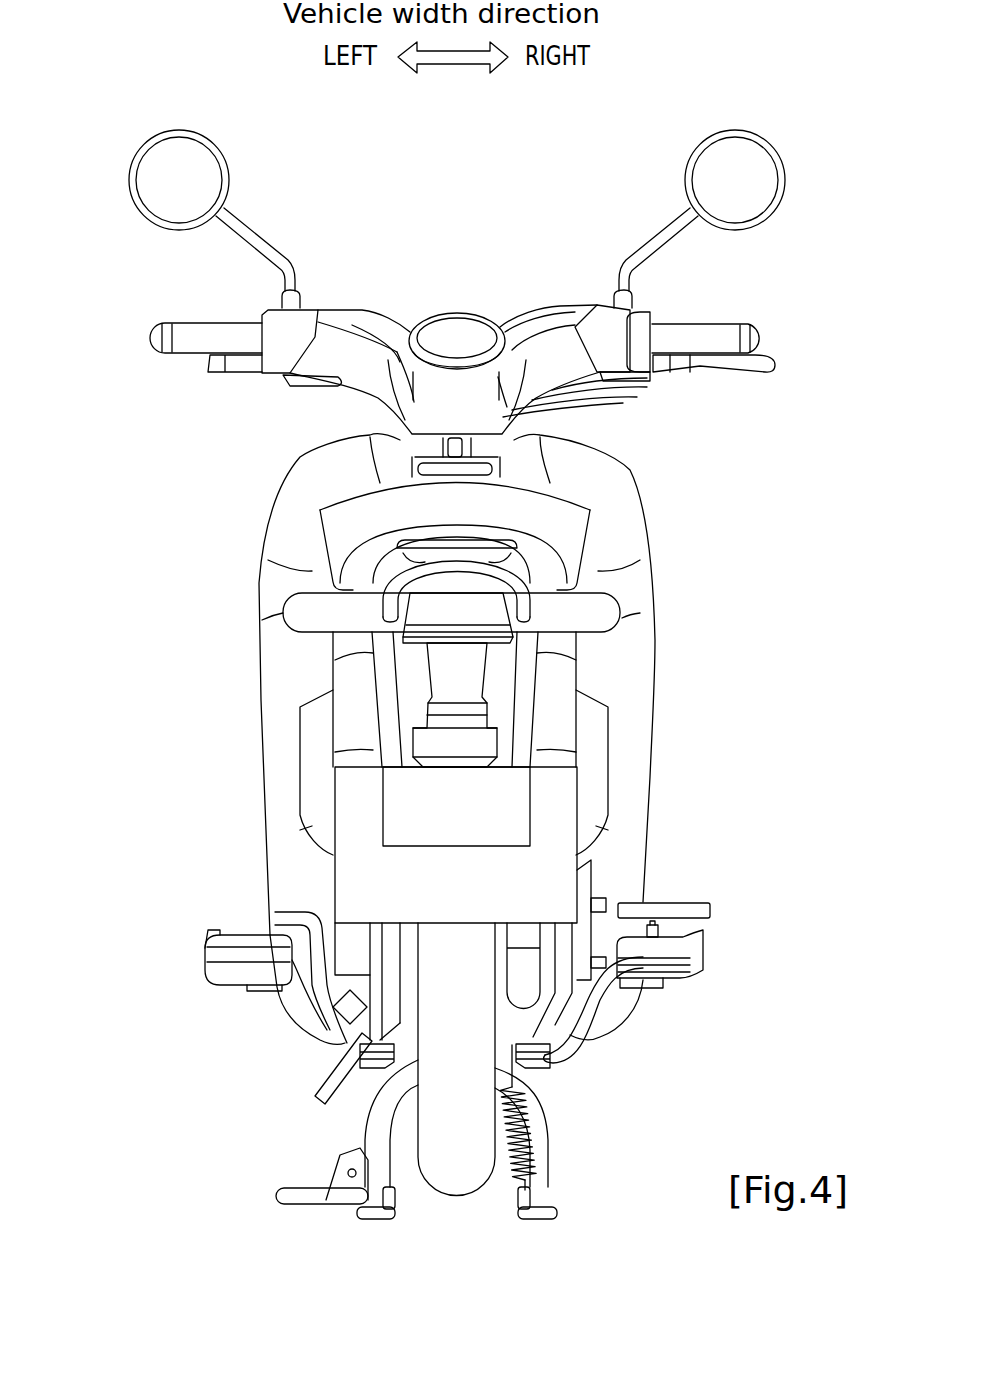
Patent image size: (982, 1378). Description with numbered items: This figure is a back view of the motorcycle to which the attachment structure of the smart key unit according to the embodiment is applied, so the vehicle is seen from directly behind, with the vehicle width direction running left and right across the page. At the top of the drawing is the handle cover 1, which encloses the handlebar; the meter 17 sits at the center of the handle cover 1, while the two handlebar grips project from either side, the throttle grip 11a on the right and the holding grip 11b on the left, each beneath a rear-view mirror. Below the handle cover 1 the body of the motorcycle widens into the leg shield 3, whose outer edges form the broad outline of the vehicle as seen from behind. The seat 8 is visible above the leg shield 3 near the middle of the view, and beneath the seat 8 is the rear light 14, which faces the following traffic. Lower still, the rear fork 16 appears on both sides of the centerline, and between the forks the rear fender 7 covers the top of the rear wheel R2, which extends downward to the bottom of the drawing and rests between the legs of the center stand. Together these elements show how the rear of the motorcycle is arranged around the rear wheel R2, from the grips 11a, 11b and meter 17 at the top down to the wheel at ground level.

The handle cover 1 is at (378, 323).
The meter 17 is at (462, 322).
The holding grip 11b is at (178, 340).
The throttle grip 11a is at (765, 350).
The leg shield 3 is at (277, 525).
The seat 8 is at (570, 519).
The rear light 14 is at (417, 613).
The rear fork 16 is at (345, 680).
The rear fender 7 is at (503, 717).
The rear wheel R2 is at (432, 1145).